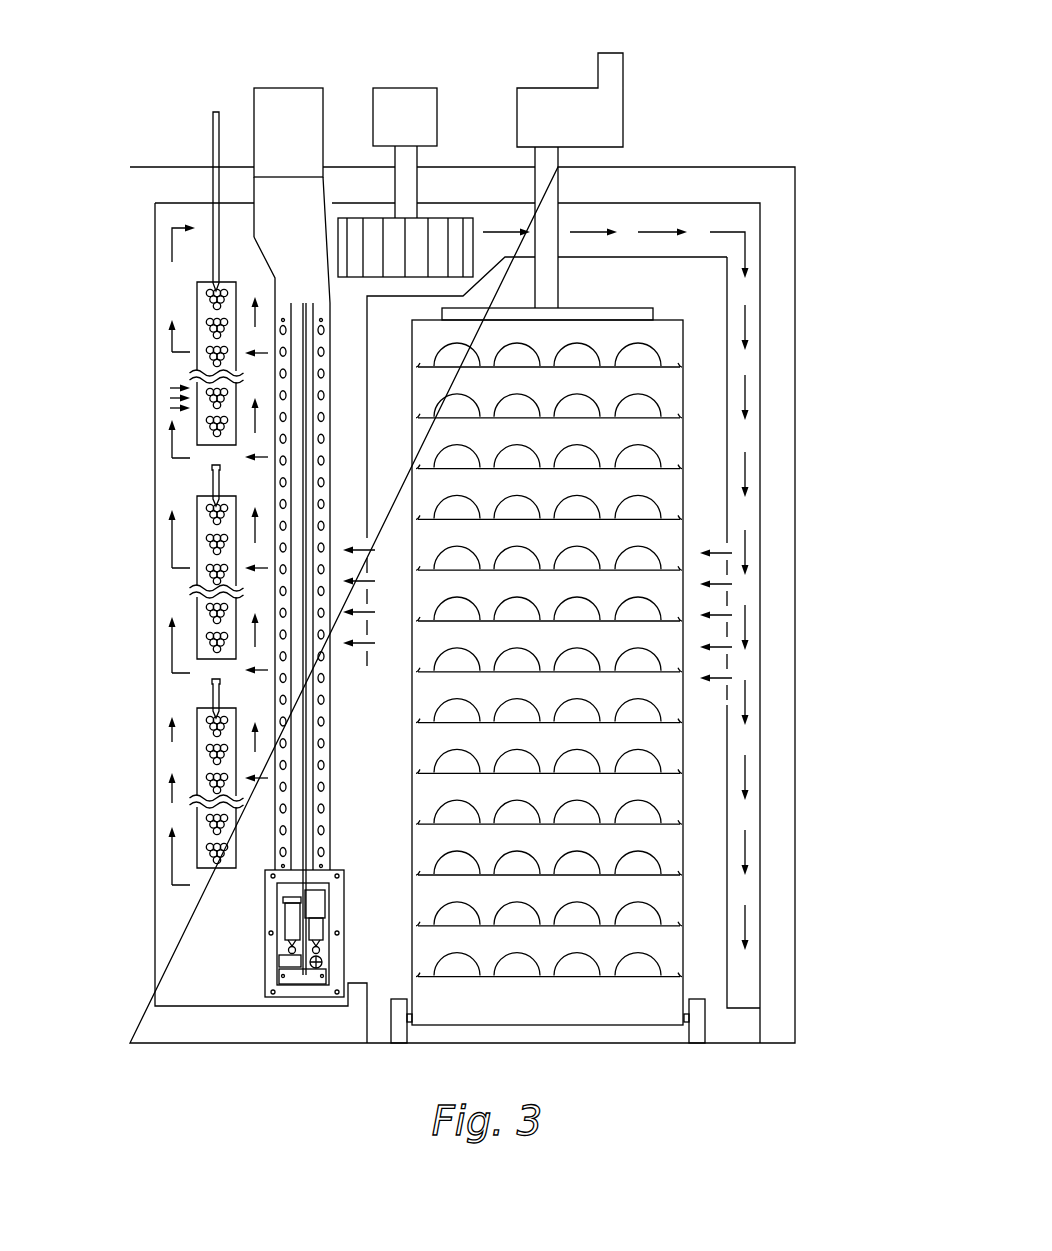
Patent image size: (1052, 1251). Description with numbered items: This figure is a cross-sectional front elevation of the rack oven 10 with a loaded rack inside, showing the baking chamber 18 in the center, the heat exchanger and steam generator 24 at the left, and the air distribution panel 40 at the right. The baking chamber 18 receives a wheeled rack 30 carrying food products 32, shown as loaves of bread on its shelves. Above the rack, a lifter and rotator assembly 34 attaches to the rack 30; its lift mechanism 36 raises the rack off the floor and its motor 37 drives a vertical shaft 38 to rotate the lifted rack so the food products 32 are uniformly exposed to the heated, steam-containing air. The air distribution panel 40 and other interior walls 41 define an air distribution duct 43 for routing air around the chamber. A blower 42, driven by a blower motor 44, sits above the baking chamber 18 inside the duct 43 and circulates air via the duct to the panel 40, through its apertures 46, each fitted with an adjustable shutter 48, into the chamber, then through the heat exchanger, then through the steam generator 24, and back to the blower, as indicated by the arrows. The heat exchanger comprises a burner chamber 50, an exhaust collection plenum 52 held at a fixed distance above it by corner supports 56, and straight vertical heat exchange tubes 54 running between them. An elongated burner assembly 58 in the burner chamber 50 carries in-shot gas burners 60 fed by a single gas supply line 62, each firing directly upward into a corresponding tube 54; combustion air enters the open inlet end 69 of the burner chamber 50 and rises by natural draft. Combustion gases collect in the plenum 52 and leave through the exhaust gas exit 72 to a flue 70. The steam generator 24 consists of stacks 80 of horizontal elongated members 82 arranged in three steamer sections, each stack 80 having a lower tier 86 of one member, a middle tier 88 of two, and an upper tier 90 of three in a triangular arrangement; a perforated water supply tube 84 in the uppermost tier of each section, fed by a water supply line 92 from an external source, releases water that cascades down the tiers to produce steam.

The rack oven 10 is at (804, 82).
The baking chamber 18 is at (696, 295).
The steam generator 24 is at (162, 651).
The wheeled rack 30 is at (685, 440).
The food products 32 is at (640, 822).
The lifter and rotator assembly 34 is at (624, 101).
The lift mechanism 36 is at (623, 310).
The motor 37 is at (541, 96).
The vertical shaft 38 is at (548, 222).
The air distribution panel 40 is at (748, 737).
The interior walls 41 is at (568, 258).
The blower 42 is at (467, 222).
The air distribution duct 43 is at (680, 212).
The blower motor 44 is at (413, 95).
The apertures 46 is at (727, 610).
The adjustable shutter 48 is at (725, 535).
The burner chamber 50 is at (268, 944).
The exhaust collection plenum 52 is at (309, 247).
The heat exchange tubes 54 is at (310, 710).
The corner supports 56 is at (298, 750).
The burner assembly 58 is at (306, 983).
The in-shot gas burners 60 is at (287, 920).
The gas supply line 62 is at (322, 960).
The open inlet end 69 is at (283, 945).
The flue 70 is at (282, 95).
The exhaust gas exit 72 is at (315, 192).
The stacks 80 is at (210, 307).
The elongated members 82 is at (214, 290).
The perforated water supply tube 84 is at (217, 290).
The lower tier 86 is at (188, 408).
The middle tier 88 is at (188, 398).
The upper tier 90 is at (188, 388).
The water supply line 92 is at (212, 121).